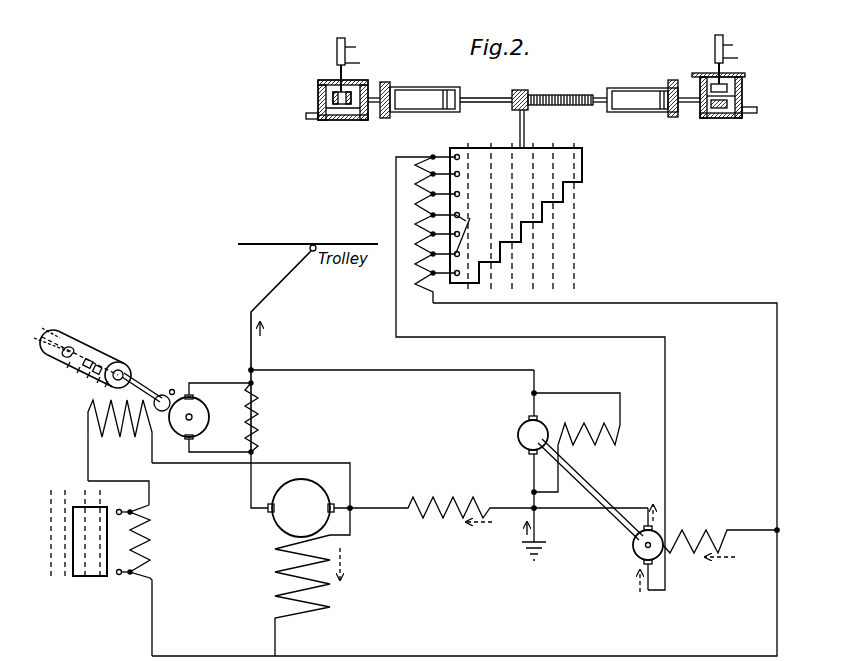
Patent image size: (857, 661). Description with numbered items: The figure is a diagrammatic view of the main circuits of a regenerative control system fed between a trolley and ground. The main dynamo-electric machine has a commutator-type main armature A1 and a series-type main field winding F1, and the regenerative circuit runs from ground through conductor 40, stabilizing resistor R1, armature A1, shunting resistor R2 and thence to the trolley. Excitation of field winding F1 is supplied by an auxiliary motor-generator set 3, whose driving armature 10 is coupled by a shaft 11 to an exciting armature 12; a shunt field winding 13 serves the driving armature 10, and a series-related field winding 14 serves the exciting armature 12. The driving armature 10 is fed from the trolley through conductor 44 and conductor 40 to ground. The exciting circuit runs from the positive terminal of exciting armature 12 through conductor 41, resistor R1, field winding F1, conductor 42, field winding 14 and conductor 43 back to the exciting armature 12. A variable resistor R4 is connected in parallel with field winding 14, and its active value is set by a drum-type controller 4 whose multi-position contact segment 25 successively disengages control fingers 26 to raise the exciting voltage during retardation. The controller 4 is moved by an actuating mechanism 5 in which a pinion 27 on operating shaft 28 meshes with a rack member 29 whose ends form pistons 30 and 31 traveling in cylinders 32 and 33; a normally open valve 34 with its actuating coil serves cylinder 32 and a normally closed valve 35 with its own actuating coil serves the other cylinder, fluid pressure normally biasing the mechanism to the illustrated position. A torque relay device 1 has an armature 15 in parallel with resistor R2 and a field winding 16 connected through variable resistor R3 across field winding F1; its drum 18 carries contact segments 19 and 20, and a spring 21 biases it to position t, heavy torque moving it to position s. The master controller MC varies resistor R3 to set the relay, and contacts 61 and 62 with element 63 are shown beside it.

The torque relay device 1 is at (100, 363).
The motor-generator set 3 is at (629, 486).
The controller 4 is at (606, 223).
The actuating mechanism 5 is at (545, 83).
The driving armature 10 is at (520, 424).
The shaft 11 is at (577, 482).
The exciting armature 12 is at (634, 547).
The shunt field winding 13 is at (584, 425).
The series-related field winding 14 is at (688, 530).
The commutator-type armature 15 is at (205, 400).
The field winding 16 is at (88, 412).
The drum 18 is at (92, 358).
The contact segment 19 is at (74, 350).
The contact segment 20 is at (102, 366).
The spring 21 is at (170, 392).
The multi-position contact segment 25 is at (516, 216).
The control fingers 26 is at (470, 234).
The pinion 27 is at (512, 92).
The operating shaft 28 is at (520, 126).
The rack member 29 is at (562, 95).
The piston 30 is at (447, 89).
The piston 31 is at (662, 90).
The operating cylinder 32 is at (420, 81).
The operating cylinder 33 is at (632, 89).
The normally open valve 34 is at (318, 92).
The normally closed valve 35 is at (742, 105).
The conductor 40 is at (538, 522).
The conductor 41 is at (593, 504).
The conductor 42 is at (432, 648).
The conductor 43 is at (665, 580).
The conductor 44 is at (360, 375).
The contact 61 is at (120, 520).
The contact 62 is at (120, 564).
The relay coil 63 is at (90, 541).
The stabilizing resistor R1 is at (482, 487).
The shunting resistor R2 is at (269, 442).
The variable resistor R3 is at (153, 580).
The variable resistor R4 is at (429, 229).
The main armature A1 is at (316, 477).
The main field winding F1 is at (283, 590).
The master controller MC is at (71, 519).